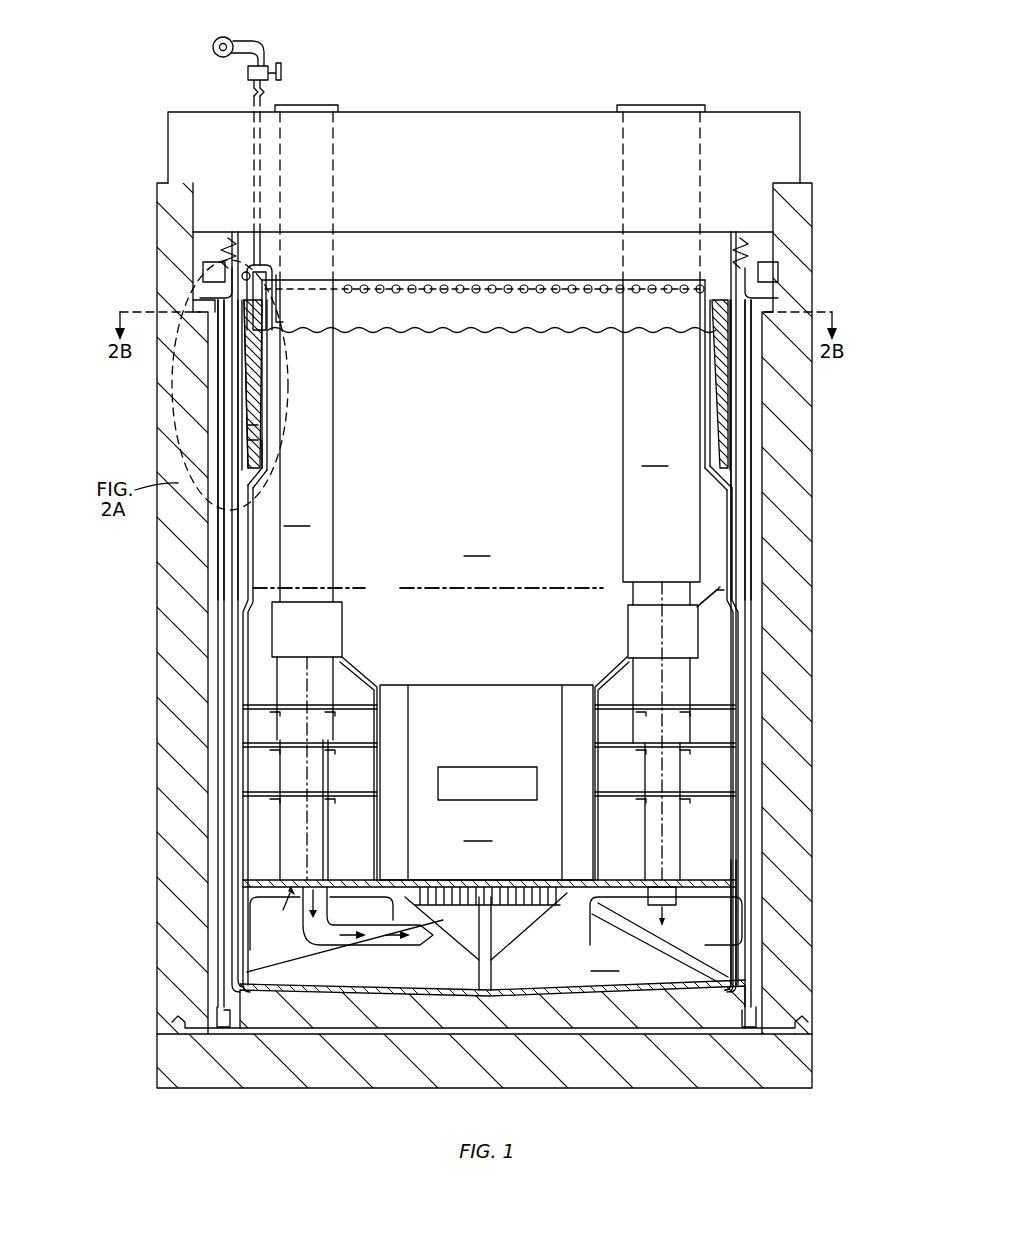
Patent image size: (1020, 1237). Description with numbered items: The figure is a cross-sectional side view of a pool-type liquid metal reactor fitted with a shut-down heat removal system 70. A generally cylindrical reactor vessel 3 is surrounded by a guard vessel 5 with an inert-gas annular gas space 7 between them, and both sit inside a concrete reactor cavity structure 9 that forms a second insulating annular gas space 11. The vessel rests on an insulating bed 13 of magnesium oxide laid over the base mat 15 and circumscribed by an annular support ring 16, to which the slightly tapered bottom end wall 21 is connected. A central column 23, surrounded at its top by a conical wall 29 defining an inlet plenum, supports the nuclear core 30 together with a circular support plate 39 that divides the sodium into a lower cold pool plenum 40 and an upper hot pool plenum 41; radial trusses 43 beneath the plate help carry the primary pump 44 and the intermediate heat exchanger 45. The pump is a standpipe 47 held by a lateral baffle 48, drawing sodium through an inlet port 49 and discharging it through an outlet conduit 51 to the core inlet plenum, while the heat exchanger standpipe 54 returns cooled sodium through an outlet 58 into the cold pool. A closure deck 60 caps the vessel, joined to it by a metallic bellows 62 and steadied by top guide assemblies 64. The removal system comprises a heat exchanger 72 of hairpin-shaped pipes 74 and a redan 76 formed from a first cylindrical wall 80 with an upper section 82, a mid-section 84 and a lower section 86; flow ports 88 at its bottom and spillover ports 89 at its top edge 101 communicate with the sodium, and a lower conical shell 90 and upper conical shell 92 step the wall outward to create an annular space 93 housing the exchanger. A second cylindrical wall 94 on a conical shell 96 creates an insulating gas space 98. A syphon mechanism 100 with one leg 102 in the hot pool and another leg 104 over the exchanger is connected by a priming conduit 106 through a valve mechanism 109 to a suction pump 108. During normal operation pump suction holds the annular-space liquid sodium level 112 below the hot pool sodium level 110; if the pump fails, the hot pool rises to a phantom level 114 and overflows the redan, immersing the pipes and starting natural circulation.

The reactor vessel 3 is at (236, 548).
The guard vessel 5 is at (224, 578).
The annular gas space 7 is at (232, 628).
The reactor cavity structure 9 is at (175, 668).
The second insulating annular gas space 11 is at (210, 708).
The insulating bed 13 is at (652, 1015).
The base mat 15 is at (278, 1078).
The annular support ring 16 is at (210, 1010).
The bottom end wall 21 is at (428, 988).
The column 23 is at (492, 975).
The conical wall 29 is at (544, 928).
The nuclear core 30 is at (486, 782).
The circular support plate 39 is at (757, 868).
The cold pool plenum 40 is at (489, 925).
The hot pool plenum 41 is at (428, 561).
The trusses 43 is at (297, 946).
The primary pump 44 is at (305, 496).
The intermediate heat exchanger 45 is at (661, 496).
The standpipe 47 is at (428, 588).
The lateral baffle 48 is at (376, 682).
The inlet port 49 is at (290, 906).
The outlet conduit 51 is at (356, 947).
The standpipe 54 is at (638, 630).
The outlet 58 is at (652, 903).
The closure deck 60 is at (542, 118).
The metallic bellows 62 is at (225, 243).
The top guide assemblies 64 is at (205, 272).
The shut-down heat removal system 70 is at (268, 347).
The heat exchanger 72 is at (252, 376).
The hairpin-shaped pipes 74 is at (250, 394).
The redan 76 is at (262, 444).
The first cylindrical wall 80 is at (250, 695).
The upper section 82 is at (262, 410).
The mid-section 84 is at (249, 545).
The lower section 86 is at (243, 802).
The flow ports 88 is at (256, 940).
The spillover ports 89 is at (466, 285).
The lower conical shell 90 is at (285, 605).
The upper conical shell 92 is at (258, 480).
The annular space 93 is at (243, 568).
The second cylindrical wall 94 is at (236, 386).
The conical shell 96 is at (240, 466).
The insulating gas space 98 is at (225, 418).
The syphon mechanism 100 is at (264, 262).
The edge 101 is at (394, 280).
The leg 102 is at (280, 300).
The leg 104 is at (200, 295).
The priming conduit 106 is at (258, 242).
The suction pump 108 is at (235, 39).
The valve mechanism 109 is at (284, 71).
The sodium level 110 is at (532, 333).
The liquid sodium level 112 is at (256, 433).
The level 114 is at (542, 286).